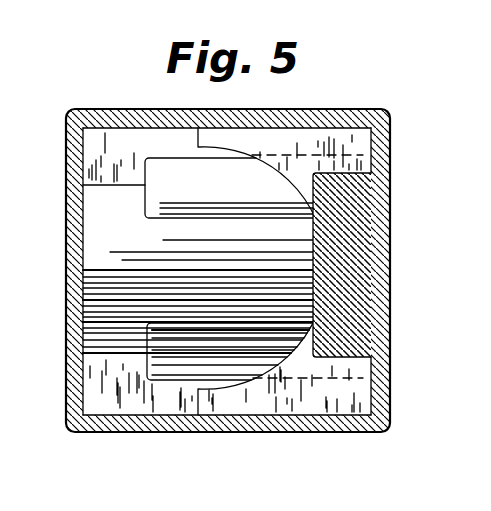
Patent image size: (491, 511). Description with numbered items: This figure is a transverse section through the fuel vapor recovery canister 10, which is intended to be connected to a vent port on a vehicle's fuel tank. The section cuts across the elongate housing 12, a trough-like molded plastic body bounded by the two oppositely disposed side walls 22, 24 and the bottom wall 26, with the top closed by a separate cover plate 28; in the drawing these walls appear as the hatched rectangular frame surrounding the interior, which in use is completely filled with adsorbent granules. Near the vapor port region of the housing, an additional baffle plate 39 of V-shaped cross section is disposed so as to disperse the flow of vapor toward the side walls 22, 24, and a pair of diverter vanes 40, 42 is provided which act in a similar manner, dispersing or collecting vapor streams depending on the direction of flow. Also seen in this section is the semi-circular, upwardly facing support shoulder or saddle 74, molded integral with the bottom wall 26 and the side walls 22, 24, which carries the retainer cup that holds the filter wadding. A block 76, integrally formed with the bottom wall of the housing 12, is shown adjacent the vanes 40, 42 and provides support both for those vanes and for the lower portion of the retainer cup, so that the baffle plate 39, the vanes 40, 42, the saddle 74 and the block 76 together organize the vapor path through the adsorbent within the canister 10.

The canister 10 is at (408, 122).
The housing 12 is at (281, 428).
The side wall 22 is at (133, 108).
The side wall 24 is at (165, 432).
The bottom wall 26 is at (392, 380).
The cover plate 28 is at (70, 272).
The baffle plate 39 is at (98, 312).
The diverter vane 40 is at (178, 168).
The diverter vane 42 is at (188, 385).
The support shoulder 74 is at (290, 395).
The block 76 is at (340, 233).